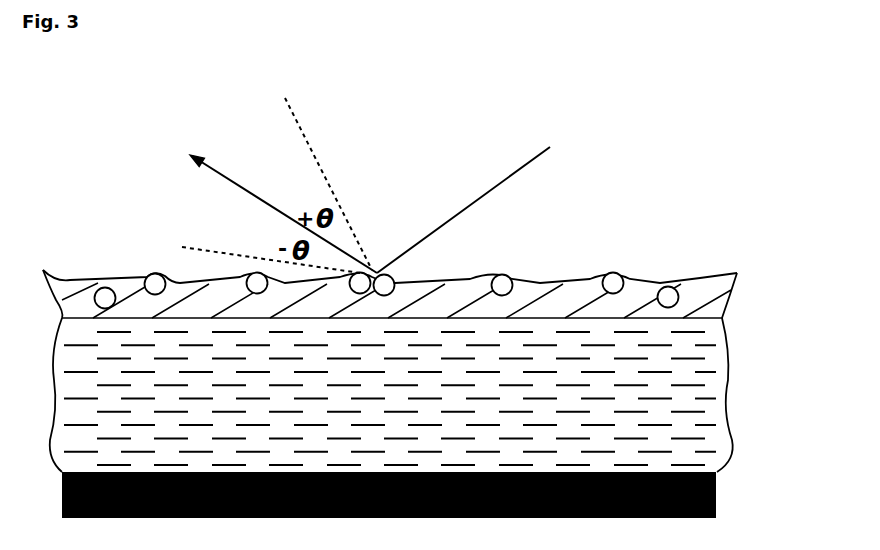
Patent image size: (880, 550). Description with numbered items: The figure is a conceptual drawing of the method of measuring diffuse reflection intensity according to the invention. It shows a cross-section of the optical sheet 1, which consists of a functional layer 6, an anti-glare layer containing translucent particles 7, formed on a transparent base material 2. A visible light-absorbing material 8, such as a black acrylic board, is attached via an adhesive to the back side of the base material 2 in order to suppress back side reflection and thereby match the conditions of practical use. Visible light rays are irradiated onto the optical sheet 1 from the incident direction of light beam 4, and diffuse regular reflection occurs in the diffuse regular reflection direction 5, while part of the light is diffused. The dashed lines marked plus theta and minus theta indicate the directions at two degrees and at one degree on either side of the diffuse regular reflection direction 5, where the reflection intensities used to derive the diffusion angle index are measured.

The optical sheet 1 is at (425, 333).
The base material 2 is at (720, 415).
The incident direction of light beam 4 is at (486, 193).
The diffuse regular reflection direction 5 is at (259, 193).
The functional layer 6 is at (712, 292).
The translucent particles 7 is at (147, 276).
The visible light-absorbing material 8 is at (713, 498).